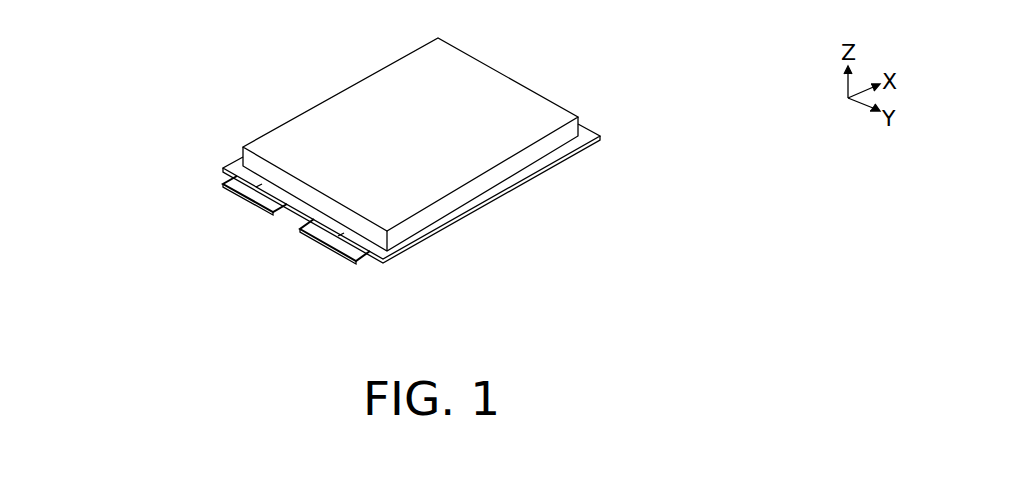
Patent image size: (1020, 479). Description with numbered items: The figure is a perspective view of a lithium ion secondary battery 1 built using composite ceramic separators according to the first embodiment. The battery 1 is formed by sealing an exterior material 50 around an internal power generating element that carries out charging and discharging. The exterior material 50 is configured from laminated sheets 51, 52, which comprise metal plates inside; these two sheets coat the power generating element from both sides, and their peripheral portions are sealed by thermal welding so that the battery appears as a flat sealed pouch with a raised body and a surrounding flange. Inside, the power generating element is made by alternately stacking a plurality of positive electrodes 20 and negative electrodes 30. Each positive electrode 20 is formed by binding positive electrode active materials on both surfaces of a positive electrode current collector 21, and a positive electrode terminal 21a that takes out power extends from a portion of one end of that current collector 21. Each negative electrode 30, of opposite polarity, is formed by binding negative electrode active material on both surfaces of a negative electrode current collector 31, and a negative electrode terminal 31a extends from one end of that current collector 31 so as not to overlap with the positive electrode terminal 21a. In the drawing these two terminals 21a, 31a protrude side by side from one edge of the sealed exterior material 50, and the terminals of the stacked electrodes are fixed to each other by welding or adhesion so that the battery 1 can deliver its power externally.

The lithium ion secondary battery 1 is at (68, 63).
The exterior material 50 is at (636, 83).
The laminated sheet 51 is at (578, 117).
The laminated sheet 52 is at (577, 153).
The positive electrode 20 is at (157, 238).
The positive electrode current collector 21 is at (223, 184).
The positive electrode terminal 21a is at (253, 206).
The negative electrode 30 is at (239, 285).
The negative electrode current collector 31 is at (303, 229).
The negative electrode terminal 31a is at (348, 254).